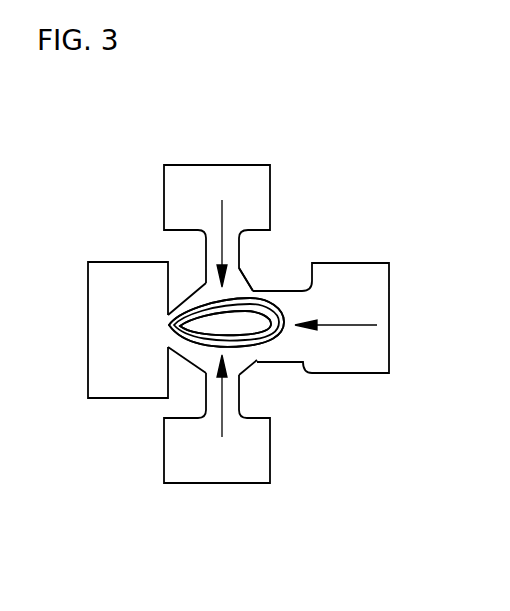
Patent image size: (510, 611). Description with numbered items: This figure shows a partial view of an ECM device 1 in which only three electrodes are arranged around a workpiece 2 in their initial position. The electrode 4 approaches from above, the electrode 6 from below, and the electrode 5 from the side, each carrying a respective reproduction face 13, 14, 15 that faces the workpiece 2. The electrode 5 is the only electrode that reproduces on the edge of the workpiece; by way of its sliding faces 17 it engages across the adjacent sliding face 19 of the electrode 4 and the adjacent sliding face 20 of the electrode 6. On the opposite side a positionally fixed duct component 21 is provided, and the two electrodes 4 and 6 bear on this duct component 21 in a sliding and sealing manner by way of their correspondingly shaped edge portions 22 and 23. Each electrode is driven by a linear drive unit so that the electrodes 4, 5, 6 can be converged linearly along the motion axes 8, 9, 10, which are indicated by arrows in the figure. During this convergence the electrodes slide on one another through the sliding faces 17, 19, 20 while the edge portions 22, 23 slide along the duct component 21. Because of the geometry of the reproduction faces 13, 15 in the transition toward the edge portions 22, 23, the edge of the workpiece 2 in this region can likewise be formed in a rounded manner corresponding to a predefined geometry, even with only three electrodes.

The ECM device 1 is at (320, 125).
The workpiece 2 is at (168, 323).
The electrode 4 is at (253, 178).
The electrode 5 is at (377, 288).
The electrode 6 is at (230, 474).
The motion axis 8 is at (216, 216).
The motion axis 9 is at (348, 327).
The motion axis 10 is at (220, 428).
The reproduction face 13 is at (232, 296).
The reproduction face 14 is at (250, 362).
The reproduction face 15 is at (210, 347).
The sliding faces 17 is at (252, 300).
The sliding face 19 is at (250, 298).
The sliding face 20 is at (250, 343).
The duct component 21 is at (102, 290).
The edge portion 22 is at (175, 310).
The edge portion 23 is at (170, 350).